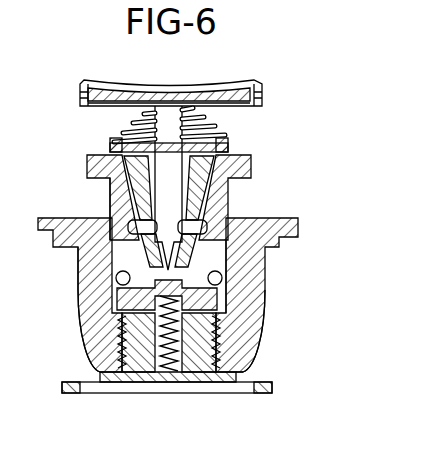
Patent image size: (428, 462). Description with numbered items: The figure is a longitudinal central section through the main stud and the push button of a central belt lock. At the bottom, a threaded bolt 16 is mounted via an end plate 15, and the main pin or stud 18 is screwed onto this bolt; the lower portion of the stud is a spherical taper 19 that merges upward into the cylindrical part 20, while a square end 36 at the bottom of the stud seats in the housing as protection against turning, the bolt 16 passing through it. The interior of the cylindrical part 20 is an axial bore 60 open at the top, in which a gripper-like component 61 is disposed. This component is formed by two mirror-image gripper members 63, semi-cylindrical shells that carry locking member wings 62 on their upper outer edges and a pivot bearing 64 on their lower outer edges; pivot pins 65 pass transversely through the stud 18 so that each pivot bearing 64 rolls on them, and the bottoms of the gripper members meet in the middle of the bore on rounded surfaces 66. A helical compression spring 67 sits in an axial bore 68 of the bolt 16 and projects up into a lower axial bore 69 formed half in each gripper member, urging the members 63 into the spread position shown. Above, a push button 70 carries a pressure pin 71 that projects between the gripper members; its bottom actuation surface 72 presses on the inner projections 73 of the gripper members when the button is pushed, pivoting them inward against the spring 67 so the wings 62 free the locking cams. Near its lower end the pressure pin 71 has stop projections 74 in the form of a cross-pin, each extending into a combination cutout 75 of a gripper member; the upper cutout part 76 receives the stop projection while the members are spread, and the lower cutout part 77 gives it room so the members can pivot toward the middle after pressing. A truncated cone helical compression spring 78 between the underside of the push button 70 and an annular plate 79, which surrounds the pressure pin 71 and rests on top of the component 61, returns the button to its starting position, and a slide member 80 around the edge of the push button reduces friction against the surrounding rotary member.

The end plate 15 is at (228, 393).
The threaded bolt 16 is at (192, 365).
The main stud 18 is at (240, 316).
The taper 19 is at (248, 360).
The cylindrical part 20 is at (100, 302).
The square end 36 is at (78, 373).
The axial bore 60 is at (226, 383).
The gripper-like component 61 is at (228, 208).
The locking member wings 62 is at (243, 172).
The gripper members 63 is at (108, 190).
The pivot bearing 64 is at (236, 294).
The pivot pins 65 is at (245, 334).
The rounded surfaces 66 is at (118, 290).
The helical compression spring 67 is at (168, 372).
The axial bore 68 is at (117, 375).
The lower axial bore 69 is at (100, 340).
The push button 70 is at (152, 86).
The pressure pin 71 is at (192, 95).
The actuation surface 72 is at (225, 283).
The inner projections 73 is at (130, 268).
The stop projections 74 is at (208, 226).
The combination cutouts 75 is at (222, 262).
The upper cutout part 76 is at (130, 222).
The lower cutout part 77 is at (118, 290).
The truncated cone helical compression spring 78 is at (196, 128).
The annular plate 79 is at (230, 148).
The slide member 80 is at (80, 104).